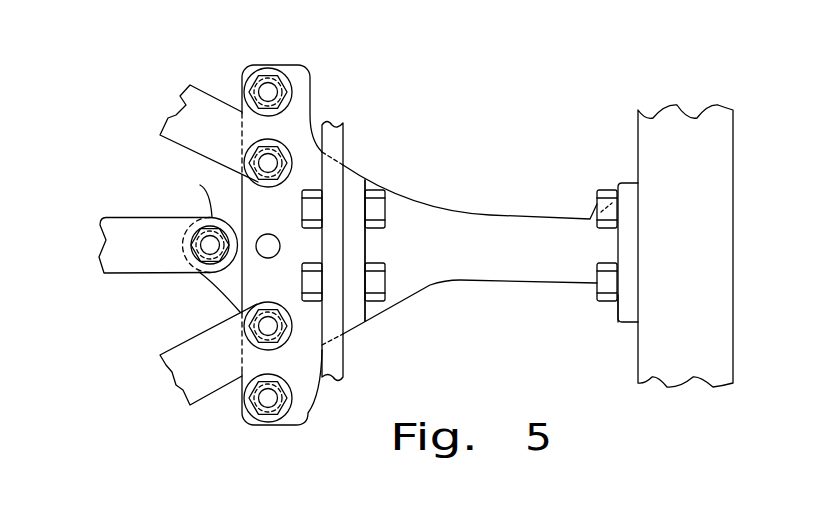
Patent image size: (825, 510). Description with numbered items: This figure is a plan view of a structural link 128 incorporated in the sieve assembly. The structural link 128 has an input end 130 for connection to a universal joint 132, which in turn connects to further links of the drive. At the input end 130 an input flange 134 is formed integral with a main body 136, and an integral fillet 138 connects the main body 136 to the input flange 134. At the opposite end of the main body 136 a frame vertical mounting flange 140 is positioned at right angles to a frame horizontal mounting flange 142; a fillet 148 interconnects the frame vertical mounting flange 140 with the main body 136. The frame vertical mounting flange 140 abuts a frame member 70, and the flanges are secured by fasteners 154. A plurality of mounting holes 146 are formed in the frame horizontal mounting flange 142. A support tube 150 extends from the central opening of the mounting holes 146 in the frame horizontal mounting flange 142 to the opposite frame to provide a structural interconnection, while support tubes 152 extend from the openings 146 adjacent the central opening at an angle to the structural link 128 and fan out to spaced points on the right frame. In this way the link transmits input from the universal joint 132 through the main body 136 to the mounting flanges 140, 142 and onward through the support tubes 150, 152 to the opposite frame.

The frame plate 70 is at (338, 142).
The structural link 128 is at (503, 398).
The input end 130 is at (652, 250).
The universal joint 132 is at (685, 130).
The input flange 134 is at (628, 183).
The main body 136 is at (482, 215).
The integral fillet 138 is at (613, 308).
The frame vertical mounting flange 140 is at (355, 178).
The frame horizontal mounting flange 142 is at (310, 92).
The mounting holes 146 is at (267, 74).
The fillet 148 is at (378, 208).
The support tube 150 is at (122, 222).
The support tubes 152 is at (187, 113).
The bolt 154 is at (302, 207).